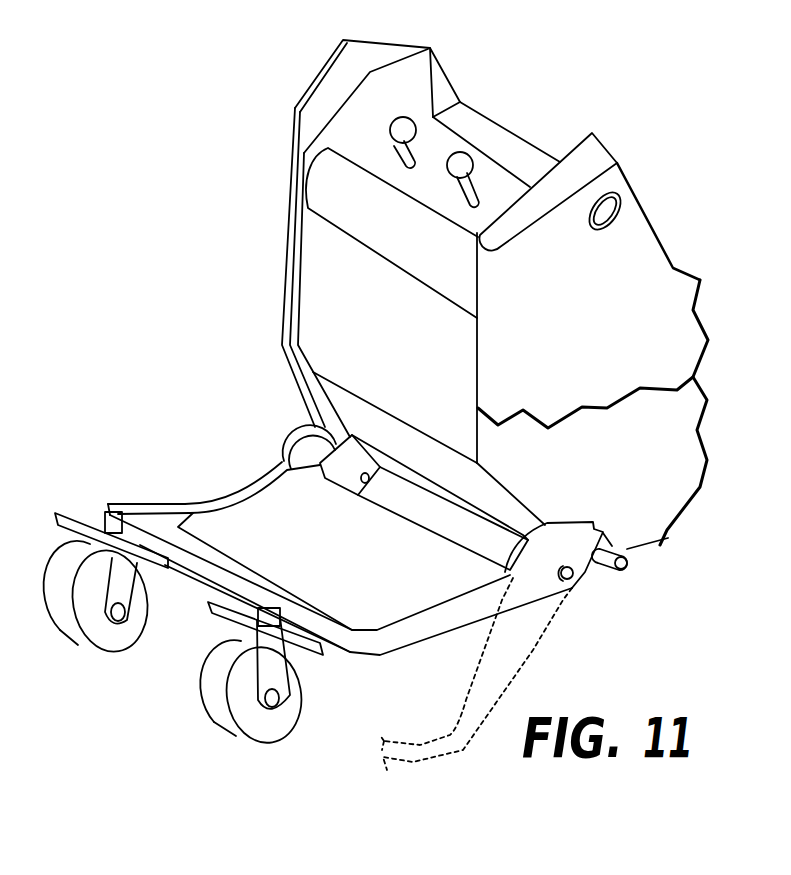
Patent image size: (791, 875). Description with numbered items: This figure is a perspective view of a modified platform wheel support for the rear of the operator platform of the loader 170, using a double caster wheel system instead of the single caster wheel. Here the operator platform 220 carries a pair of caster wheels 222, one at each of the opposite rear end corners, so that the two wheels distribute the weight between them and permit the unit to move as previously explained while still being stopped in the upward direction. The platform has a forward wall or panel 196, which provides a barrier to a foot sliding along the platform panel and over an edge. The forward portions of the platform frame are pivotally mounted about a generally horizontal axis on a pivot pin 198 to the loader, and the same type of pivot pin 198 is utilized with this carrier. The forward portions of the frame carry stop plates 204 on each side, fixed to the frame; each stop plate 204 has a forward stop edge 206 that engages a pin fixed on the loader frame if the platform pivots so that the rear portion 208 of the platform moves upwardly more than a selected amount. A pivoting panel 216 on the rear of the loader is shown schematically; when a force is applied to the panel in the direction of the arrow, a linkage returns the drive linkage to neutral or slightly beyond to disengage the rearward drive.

The loader 170 is at (264, 223).
The forward wall or panel 196 is at (427, 517).
The pivot pin 198 is at (573, 589).
The stop plate 204 is at (550, 530).
The forward stop edge 206 is at (606, 530).
The rear portion 208 is at (629, 547).
The pivoting panel 216 is at (405, 228).
The operator platform 220 is at (260, 515).
The caster wheel 222 is at (97, 641).